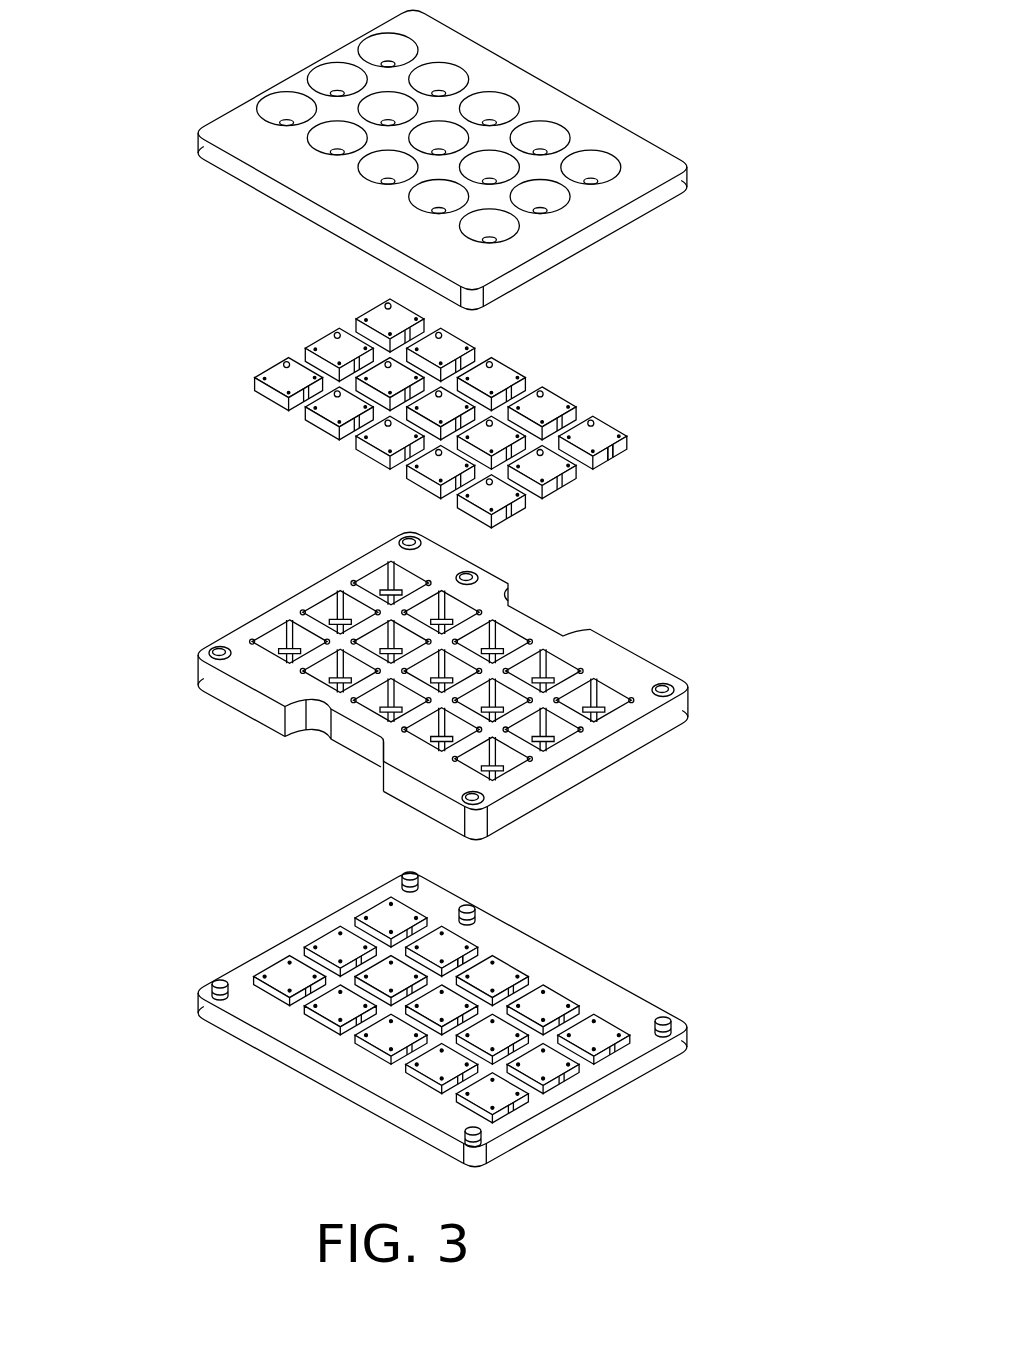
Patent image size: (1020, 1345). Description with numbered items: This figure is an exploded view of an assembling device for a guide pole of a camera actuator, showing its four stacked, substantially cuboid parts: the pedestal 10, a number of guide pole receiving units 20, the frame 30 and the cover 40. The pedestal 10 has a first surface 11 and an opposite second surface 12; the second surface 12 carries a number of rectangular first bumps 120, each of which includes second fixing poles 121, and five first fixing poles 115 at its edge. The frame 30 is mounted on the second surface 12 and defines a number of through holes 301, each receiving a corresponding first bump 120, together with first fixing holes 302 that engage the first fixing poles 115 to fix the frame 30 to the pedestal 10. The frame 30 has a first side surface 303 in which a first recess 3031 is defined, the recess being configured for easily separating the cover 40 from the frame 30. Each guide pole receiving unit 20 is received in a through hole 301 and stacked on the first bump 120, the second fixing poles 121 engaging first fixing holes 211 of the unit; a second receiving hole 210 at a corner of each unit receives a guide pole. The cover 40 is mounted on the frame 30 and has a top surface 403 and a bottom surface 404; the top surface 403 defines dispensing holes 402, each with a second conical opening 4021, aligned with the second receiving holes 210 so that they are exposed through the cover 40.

The cover 40 is at (657, 133).
The dispensing hole 402 is at (517, 97).
The second conical opening 4021 is at (490, 107).
The top surface 403 is at (237, 123).
The bottom surface 404 is at (225, 174).
The guide pole receiving unit 20 is at (617, 437).
The second receiving hole 210 is at (591, 421).
The first fixing hole 211 is at (605, 427).
The frame 30 is at (645, 640).
The through hole 301 is at (613, 716).
The first fixing hole 302 is at (673, 689).
The first side surface 303 is at (240, 700).
The first recess 3031 is at (353, 735).
The pedestal 10 is at (615, 965).
The first surface 11 is at (620, 1105).
The first fixing pole 115 is at (670, 1022).
The second surface 12 is at (265, 1013).
The first bump 120 is at (447, 940).
The second fixing pole 121 is at (467, 947).